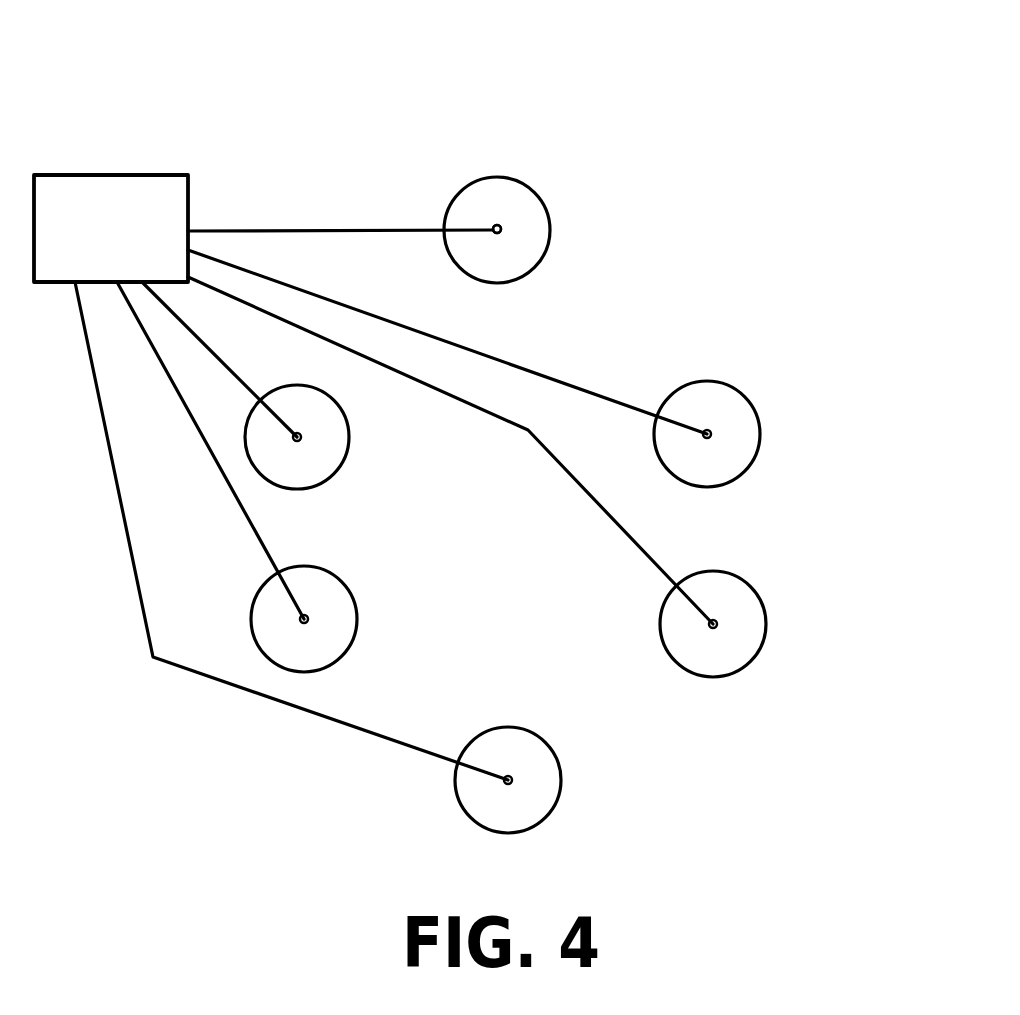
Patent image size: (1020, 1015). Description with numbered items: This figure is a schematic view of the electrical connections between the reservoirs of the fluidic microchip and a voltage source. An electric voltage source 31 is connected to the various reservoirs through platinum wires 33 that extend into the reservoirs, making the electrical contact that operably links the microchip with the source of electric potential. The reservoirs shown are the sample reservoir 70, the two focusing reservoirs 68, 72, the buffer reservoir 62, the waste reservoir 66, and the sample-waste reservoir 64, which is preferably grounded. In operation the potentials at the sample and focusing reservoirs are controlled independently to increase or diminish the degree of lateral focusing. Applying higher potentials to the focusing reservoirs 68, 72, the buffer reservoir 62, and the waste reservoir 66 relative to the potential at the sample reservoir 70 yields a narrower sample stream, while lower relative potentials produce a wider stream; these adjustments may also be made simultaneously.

The electric voltage source 31 is at (98, 175).
The platinum wires 33 is at (504, 226).
The focusing reservoir 72 is at (527, 237).
The sample reservoir 70 is at (318, 459).
The buffer reservoir 62 is at (737, 428).
The sample-waste reservoir 64 is at (743, 618).
The focusing reservoir 68 is at (332, 620).
The waste reservoir 66 is at (542, 778).